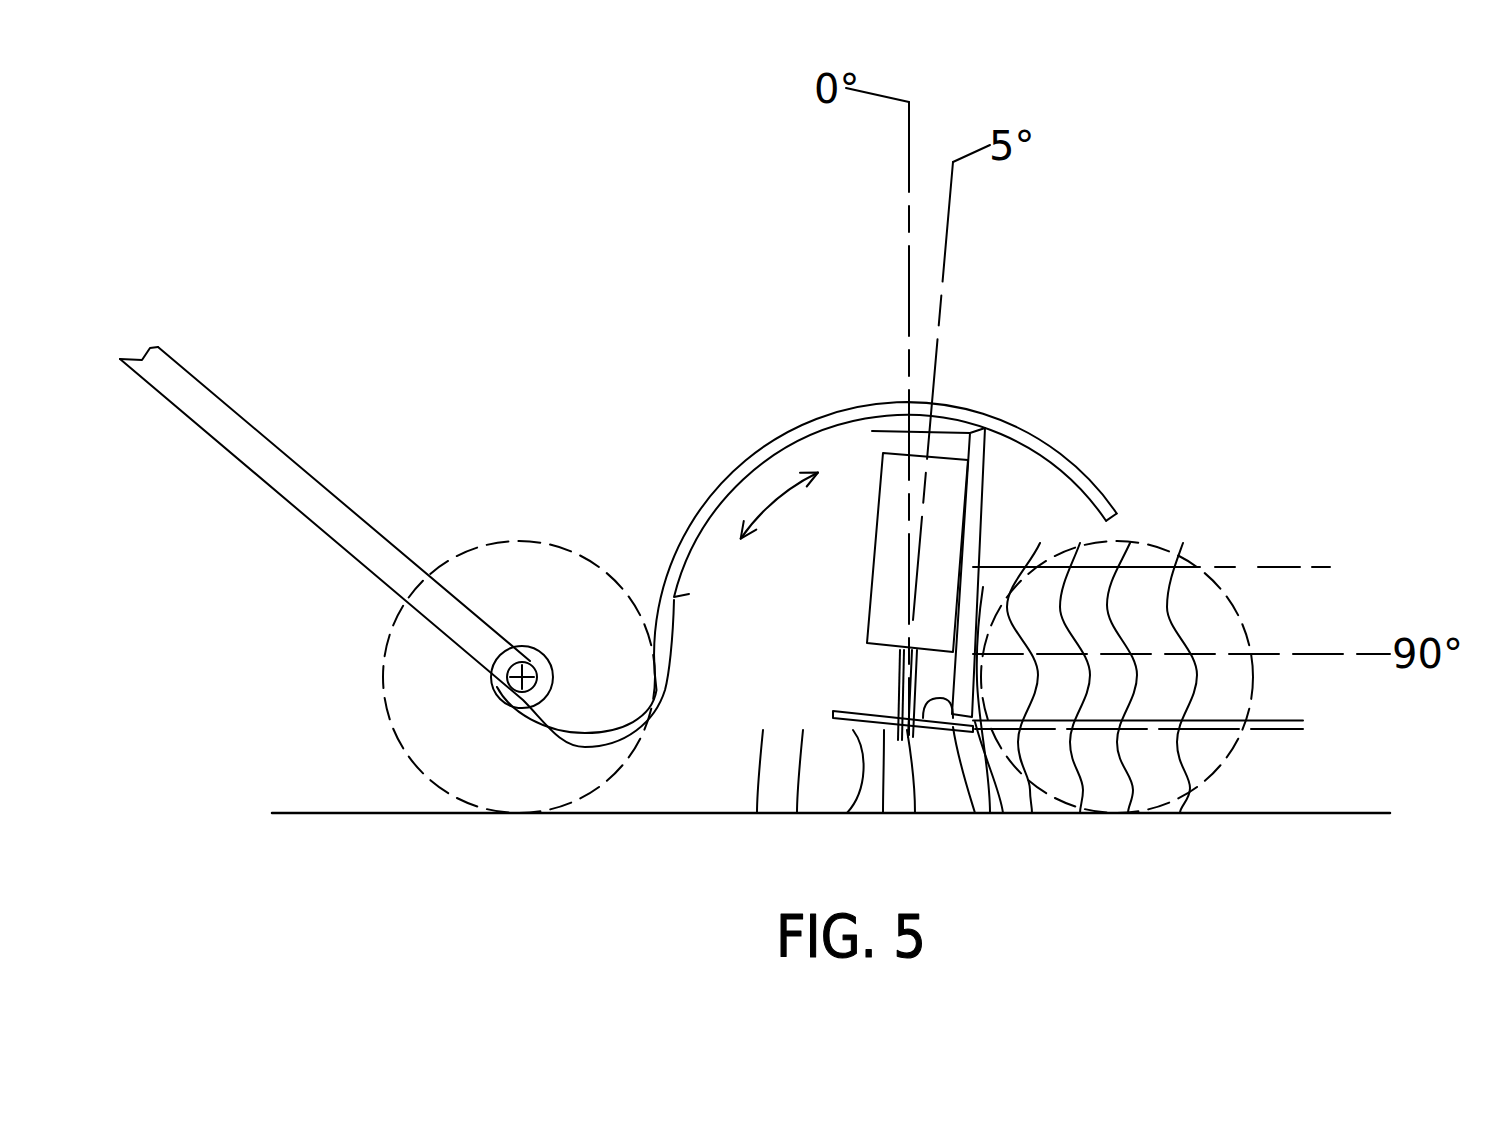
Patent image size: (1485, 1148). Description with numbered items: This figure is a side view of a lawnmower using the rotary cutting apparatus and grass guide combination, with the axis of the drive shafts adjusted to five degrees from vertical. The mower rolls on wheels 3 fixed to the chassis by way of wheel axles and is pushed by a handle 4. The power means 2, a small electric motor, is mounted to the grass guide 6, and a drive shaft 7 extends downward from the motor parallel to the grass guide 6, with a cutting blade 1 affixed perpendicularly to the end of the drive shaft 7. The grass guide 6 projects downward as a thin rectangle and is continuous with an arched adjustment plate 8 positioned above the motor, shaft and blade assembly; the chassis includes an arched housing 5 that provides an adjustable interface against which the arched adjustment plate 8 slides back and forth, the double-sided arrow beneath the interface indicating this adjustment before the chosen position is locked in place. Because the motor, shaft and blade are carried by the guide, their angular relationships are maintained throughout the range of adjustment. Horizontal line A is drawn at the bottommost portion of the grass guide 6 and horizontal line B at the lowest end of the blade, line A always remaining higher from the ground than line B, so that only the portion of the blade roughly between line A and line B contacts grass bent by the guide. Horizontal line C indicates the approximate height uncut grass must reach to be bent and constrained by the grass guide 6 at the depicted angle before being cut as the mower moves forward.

The cutting blade 1 is at (833, 714).
The power means 2 is at (868, 602).
The wheels 3 is at (493, 542).
The handle 4 is at (250, 426).
The arched housing 5 is at (713, 492).
The grass guide 6 is at (923, 726).
The drive shaft 7 is at (900, 683).
The arched adjustment plate 8 is at (872, 432).
The line A is at (1303, 720).
The line B is at (1303, 729).
The line C is at (1166, 565).